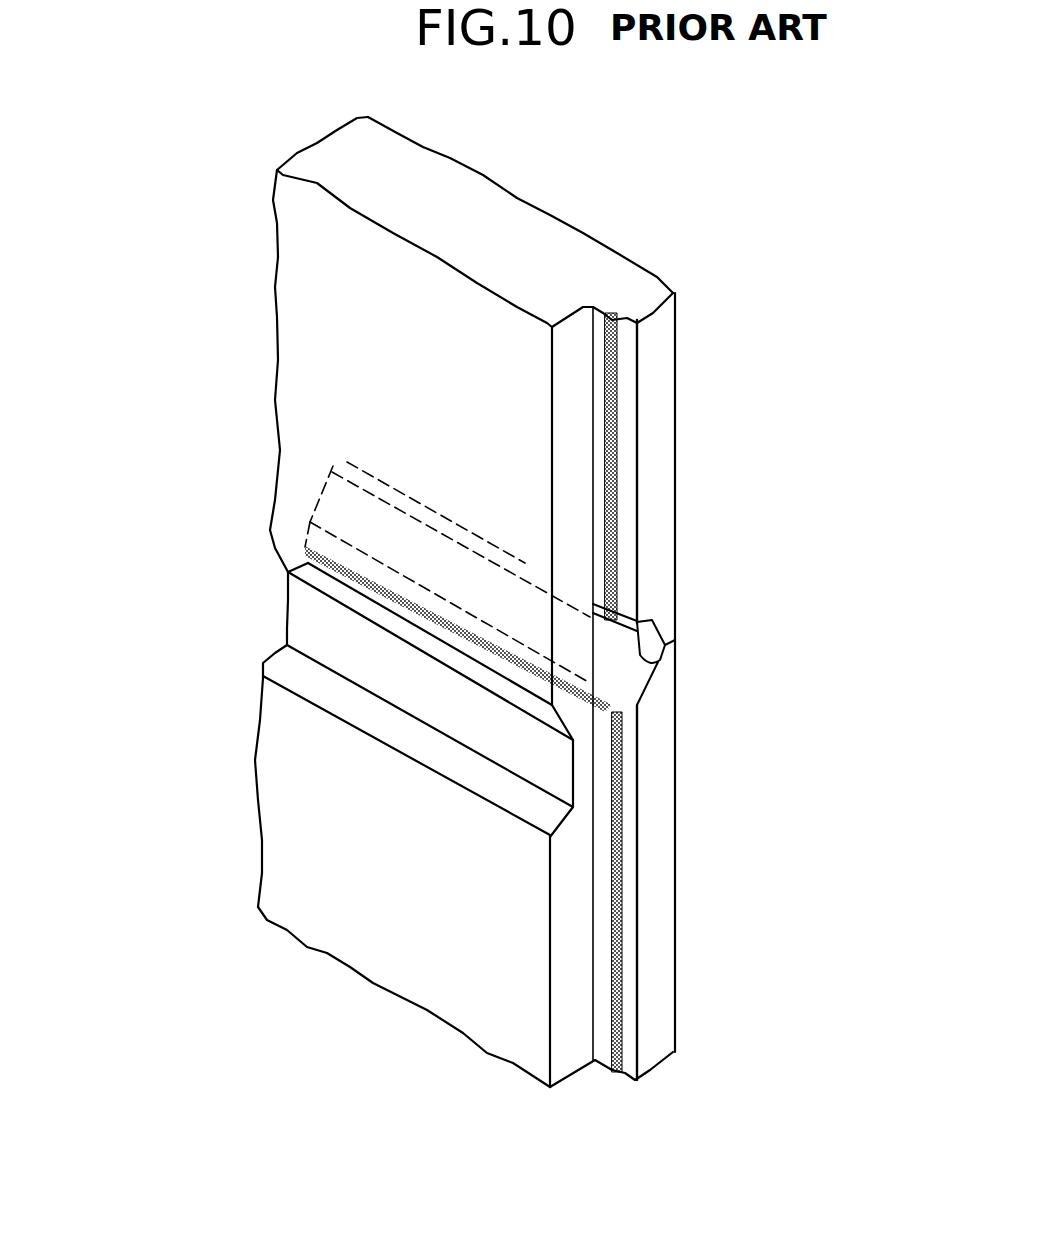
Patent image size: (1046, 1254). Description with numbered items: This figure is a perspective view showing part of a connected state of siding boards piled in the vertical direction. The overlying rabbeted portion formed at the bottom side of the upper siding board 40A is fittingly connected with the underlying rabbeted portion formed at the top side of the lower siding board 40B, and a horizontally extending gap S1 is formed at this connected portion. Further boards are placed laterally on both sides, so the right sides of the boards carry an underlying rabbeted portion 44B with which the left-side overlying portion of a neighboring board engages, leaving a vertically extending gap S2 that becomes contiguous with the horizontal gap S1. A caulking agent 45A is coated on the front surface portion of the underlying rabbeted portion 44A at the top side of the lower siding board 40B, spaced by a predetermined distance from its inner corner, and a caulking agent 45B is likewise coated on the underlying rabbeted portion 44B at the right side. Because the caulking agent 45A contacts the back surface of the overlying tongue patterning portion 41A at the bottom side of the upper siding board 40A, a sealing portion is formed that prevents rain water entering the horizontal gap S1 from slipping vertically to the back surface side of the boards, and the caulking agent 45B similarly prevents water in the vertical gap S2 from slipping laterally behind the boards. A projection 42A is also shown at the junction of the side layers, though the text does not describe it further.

The upper siding board 40A is at (262, 363).
The lower siding board 40B is at (245, 873).
The overlying tongue patterning portion 41A is at (345, 607).
The projection 42A is at (660, 658).
The underlying rabbeted portion 44A is at (627, 667).
The underlying rabbeted portion 44B is at (657, 352).
The caulking agent 45A is at (408, 597).
The caulking agent 45B is at (613, 438).
The horizontal gap S1 is at (490, 667).
The vertical gap S2 is at (598, 516).